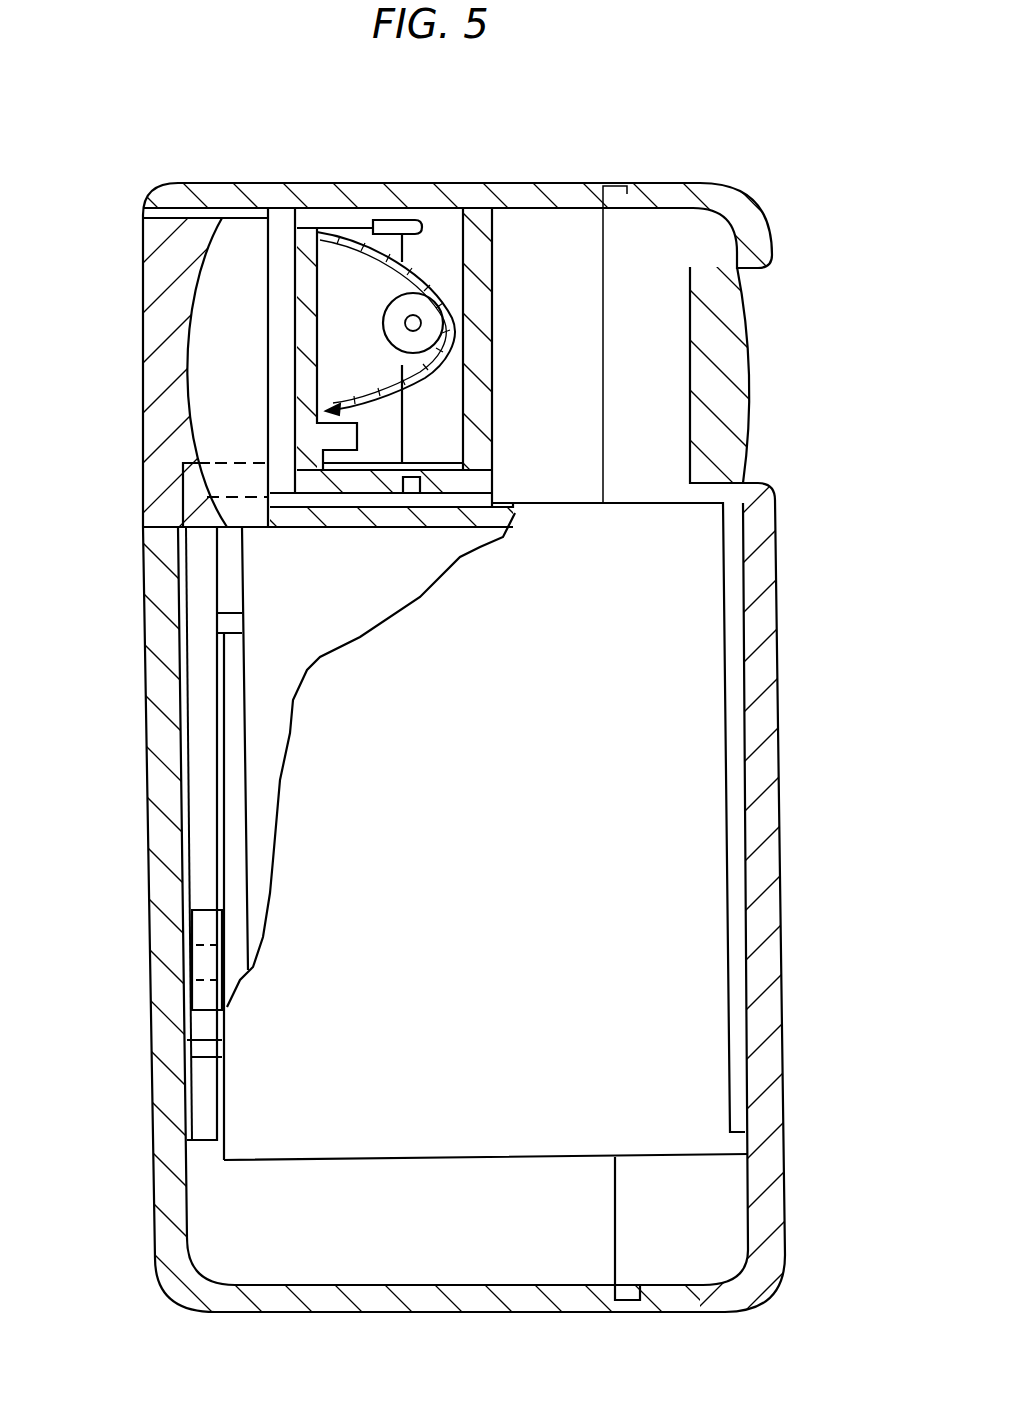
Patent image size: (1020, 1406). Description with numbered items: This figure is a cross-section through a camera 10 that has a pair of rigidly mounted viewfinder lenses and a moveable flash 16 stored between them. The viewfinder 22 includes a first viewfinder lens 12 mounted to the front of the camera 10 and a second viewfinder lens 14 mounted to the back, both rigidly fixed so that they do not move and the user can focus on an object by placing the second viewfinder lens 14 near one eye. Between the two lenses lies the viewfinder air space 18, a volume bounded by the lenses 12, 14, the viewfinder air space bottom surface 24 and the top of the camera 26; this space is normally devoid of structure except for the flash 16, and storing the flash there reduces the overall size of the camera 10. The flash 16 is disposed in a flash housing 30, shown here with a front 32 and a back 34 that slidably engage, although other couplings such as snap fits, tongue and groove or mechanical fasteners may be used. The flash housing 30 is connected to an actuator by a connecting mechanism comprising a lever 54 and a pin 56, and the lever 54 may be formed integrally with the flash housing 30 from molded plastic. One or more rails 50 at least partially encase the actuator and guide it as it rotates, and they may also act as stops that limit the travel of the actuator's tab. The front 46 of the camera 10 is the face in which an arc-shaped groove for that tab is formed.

The camera 10 is at (742, 60).
The first viewfinder lens 12 is at (148, 333).
The second viewfinder lens 14 is at (745, 345).
The flash 16 is at (337, 323).
The viewfinder air space 18 is at (573, 278).
The viewfinder 22 is at (742, 168).
The viewfinder air space bottom surface 24 is at (510, 513).
The top of the camera 26 is at (549, 183).
The flash housing 30 is at (436, 176).
The front of the flash housing 32 is at (340, 183).
The back of the flash housing 34 is at (450, 183).
The front of the camera 46 is at (148, 718).
The rails 50 is at (227, 622).
The lever 54 is at (207, 932).
The pin 56 is at (195, 958).